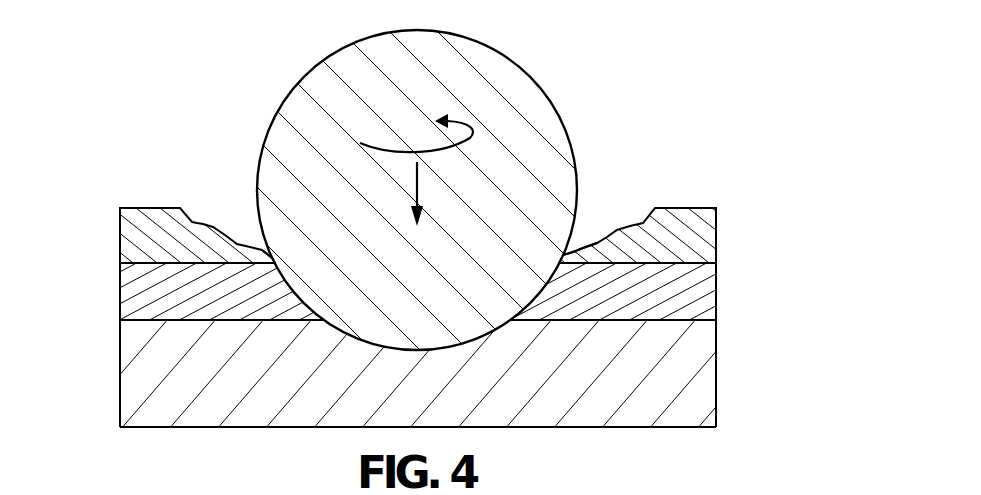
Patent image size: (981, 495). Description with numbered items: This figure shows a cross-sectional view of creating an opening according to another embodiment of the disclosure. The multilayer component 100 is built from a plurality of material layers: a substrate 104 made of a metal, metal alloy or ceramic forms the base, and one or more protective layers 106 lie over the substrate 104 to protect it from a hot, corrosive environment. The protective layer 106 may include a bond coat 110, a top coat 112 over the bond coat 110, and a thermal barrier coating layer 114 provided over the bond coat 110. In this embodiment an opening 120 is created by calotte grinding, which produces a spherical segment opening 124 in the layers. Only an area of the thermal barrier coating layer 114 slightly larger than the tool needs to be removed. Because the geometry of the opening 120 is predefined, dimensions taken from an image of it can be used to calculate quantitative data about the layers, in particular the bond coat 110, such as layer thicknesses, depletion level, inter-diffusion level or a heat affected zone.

The multilayer component 100 is at (124, 191).
The substrate 104 is at (705, 377).
The protective layer 106 is at (112, 208).
The bond coat 110 is at (700, 292).
The top coat 112 is at (720, 223).
The thermal barrier coating layer 114 is at (702, 237).
The opening 120 is at (563, 256).
The spherical segment opening 124 is at (482, 338).